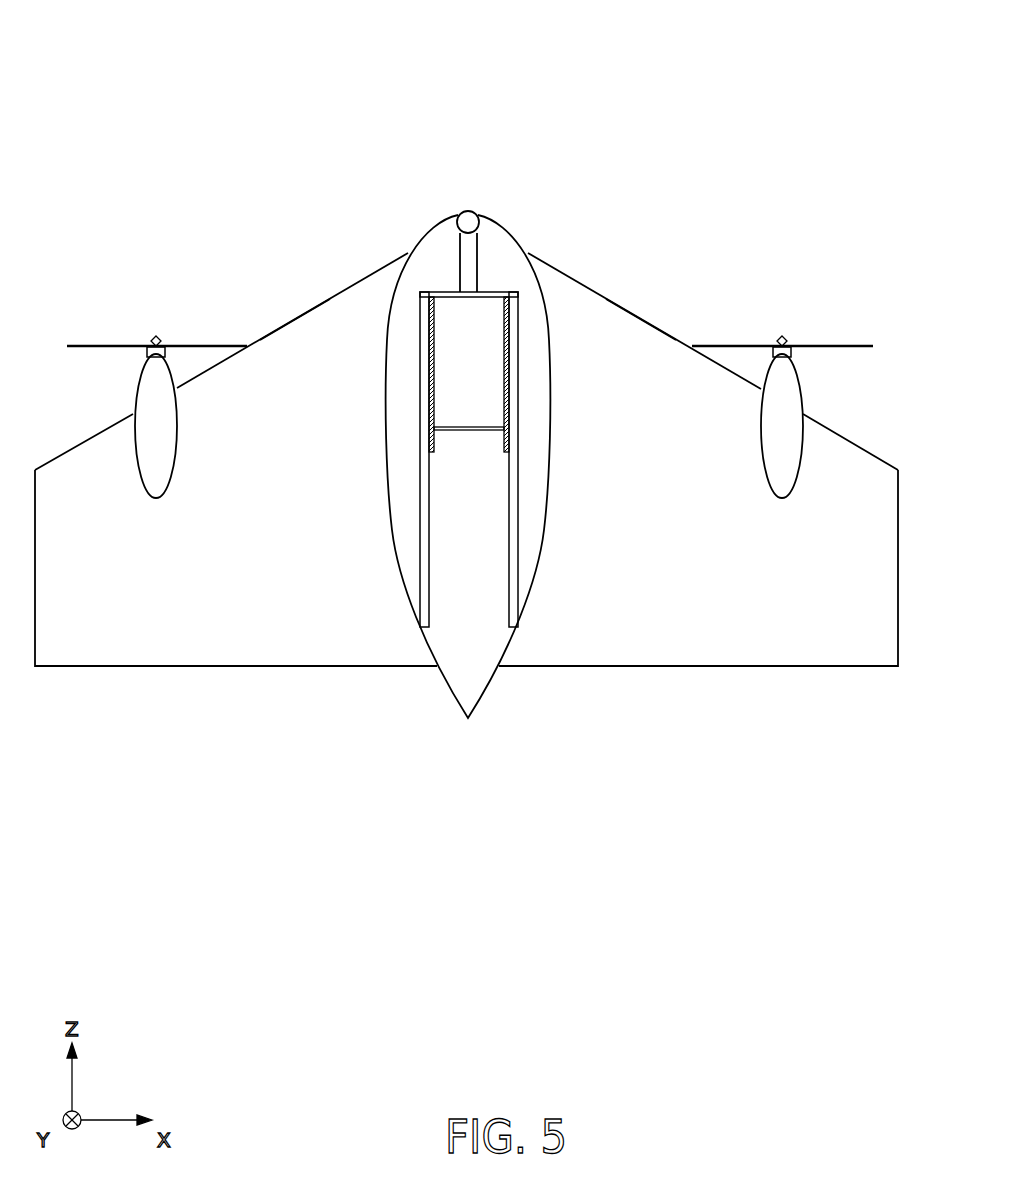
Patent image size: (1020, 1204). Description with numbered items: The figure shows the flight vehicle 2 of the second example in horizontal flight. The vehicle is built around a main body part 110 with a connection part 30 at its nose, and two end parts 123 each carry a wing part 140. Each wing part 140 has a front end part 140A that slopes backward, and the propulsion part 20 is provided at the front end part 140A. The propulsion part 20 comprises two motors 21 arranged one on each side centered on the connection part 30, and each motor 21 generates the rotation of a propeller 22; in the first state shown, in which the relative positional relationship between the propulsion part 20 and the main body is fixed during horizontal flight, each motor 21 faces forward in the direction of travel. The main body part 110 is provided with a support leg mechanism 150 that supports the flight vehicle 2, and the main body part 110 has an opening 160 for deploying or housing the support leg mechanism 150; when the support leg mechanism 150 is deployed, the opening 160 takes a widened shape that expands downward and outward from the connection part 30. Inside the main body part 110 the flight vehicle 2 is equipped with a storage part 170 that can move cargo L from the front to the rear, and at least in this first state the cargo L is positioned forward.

The flight vehicle 2 is at (299, 208).
The propulsion part 20 is at (157, 458).
The motor 21 is at (145, 353).
The propeller 22 is at (118, 344).
The connection part 30 is at (468, 211).
The main body part 110 is at (407, 565).
The end part 123 is at (298, 338).
The wing part 140 is at (187, 613).
The front end part 140A is at (335, 290).
The support leg mechanism 150 is at (427, 373).
The opening 160 is at (469, 612).
The storage part 170 is at (423, 438).
The cargo L is at (478, 408).